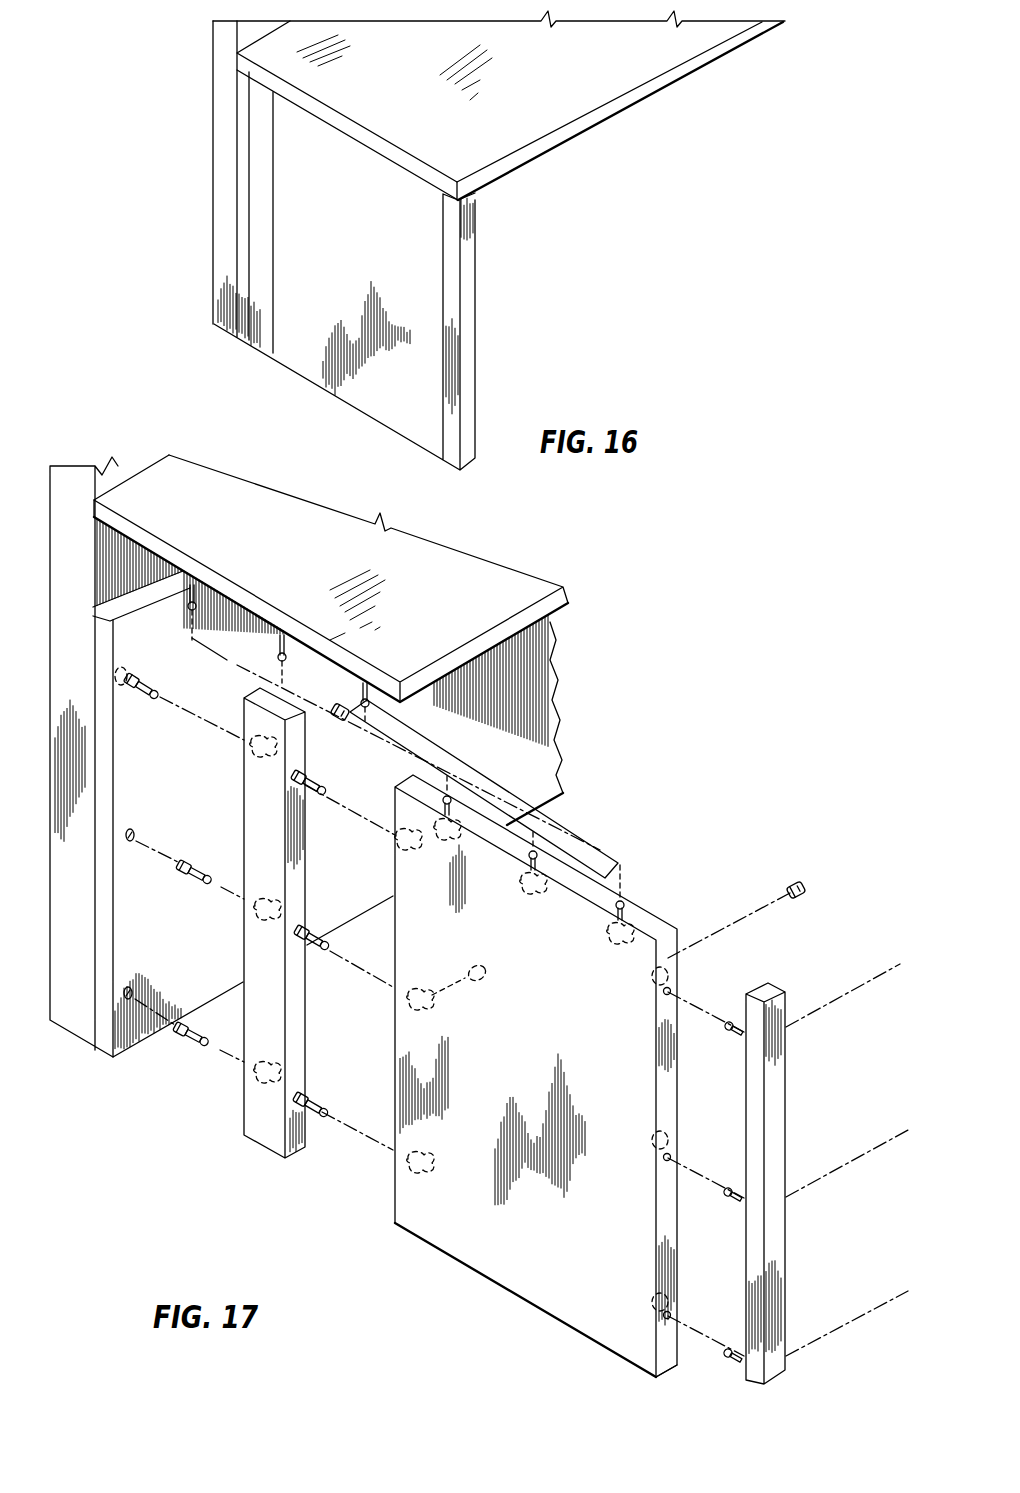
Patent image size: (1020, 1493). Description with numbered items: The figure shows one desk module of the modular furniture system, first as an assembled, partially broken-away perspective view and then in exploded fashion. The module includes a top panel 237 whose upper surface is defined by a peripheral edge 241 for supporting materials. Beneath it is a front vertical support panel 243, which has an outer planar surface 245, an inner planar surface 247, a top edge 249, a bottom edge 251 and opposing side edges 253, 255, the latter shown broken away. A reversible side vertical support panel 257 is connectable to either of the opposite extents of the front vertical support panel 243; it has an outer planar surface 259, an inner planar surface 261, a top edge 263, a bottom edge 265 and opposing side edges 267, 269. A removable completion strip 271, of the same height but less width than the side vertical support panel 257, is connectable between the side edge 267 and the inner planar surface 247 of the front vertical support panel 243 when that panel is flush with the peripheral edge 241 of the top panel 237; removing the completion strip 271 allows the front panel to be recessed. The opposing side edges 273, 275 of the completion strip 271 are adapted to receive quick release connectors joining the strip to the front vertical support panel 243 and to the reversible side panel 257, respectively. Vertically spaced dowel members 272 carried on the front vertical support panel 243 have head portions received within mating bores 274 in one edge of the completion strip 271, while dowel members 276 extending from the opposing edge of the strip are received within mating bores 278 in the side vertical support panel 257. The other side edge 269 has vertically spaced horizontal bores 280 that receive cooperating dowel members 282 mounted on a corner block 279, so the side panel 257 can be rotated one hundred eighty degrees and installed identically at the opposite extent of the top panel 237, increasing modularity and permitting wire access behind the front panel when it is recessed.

In FIG. 16, the top panel 237 is at (547, 115).
In FIG. 17, the top panel 237 is at (538, 585).
In FIG. 16, the peripheral edge 241 is at (253, 40).
In FIG. 17, the peripheral edge 241 is at (123, 483).
In FIG. 16, the front vertical support panel 243 is at (242, 107).
In FIG. 17, the front vertical support panel 243 is at (90, 688).
In FIG. 17, the outer planar surface 245 is at (120, 973).
In FIG. 17, the inner planar surface 247 is at (97, 1023).
In FIG. 17, the top edge 249 is at (141, 591).
In FIG. 17, the bottom edge 251 is at (153, 1037).
In FIG. 17, the side edge 253 is at (98, 866).
In FIG. 17, the side edge 255 is at (553, 690).
In FIG. 16, the side vertical support panel 257 is at (303, 248).
In FIG. 17, the side vertical support panel 257 is at (440, 1152).
In FIG. 17, the outer planar surface 259 is at (443, 1225).
In FIG. 17, the inner planar surface 261 is at (683, 1330).
In FIG. 17, the top edge 263 is at (580, 888).
In FIG. 17, the bottom edge 265 is at (528, 1300).
In FIG. 17, the side edge 267 is at (392, 917).
In FIG. 17, the side edge 269 is at (668, 1181).
In FIG. 16, the completion strip 271 is at (263, 180).
In FIG. 17, the completion strip 271 is at (268, 1132).
In FIG. 17, the dowel members 272 is at (128, 692).
In FIG. 17, the side edge of completion strip 273 is at (310, 1120).
In FIG. 17, the mating bores 274 is at (243, 768).
In FIG. 17, the side edge of completion strip 275 is at (293, 962).
In FIG. 17, the dowel members 276 is at (317, 797).
In FIG. 17, the mating bores 278 is at (397, 866).
In FIG. 17, the corner block 279 is at (774, 1267).
In FIG. 17, the horizontal bores 280 is at (675, 978).
In FIG. 17, the dowel members 282 is at (774, 1063).